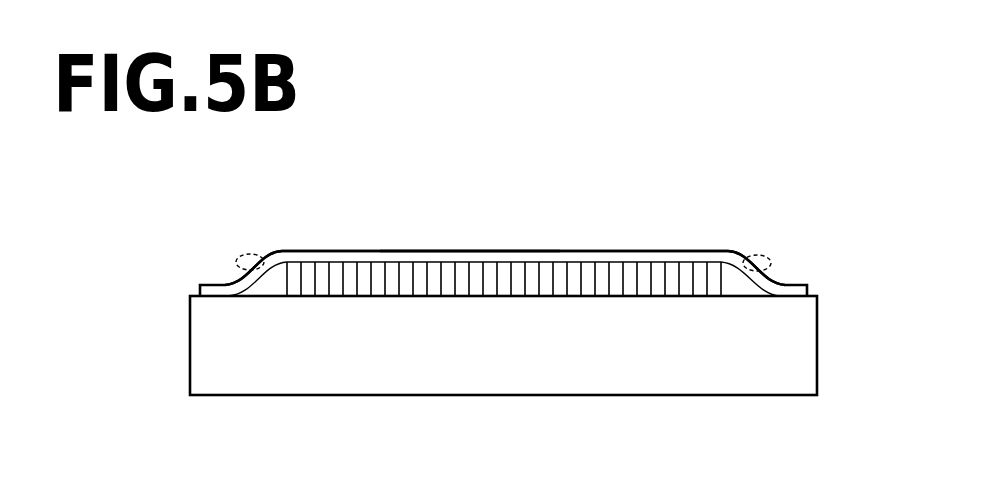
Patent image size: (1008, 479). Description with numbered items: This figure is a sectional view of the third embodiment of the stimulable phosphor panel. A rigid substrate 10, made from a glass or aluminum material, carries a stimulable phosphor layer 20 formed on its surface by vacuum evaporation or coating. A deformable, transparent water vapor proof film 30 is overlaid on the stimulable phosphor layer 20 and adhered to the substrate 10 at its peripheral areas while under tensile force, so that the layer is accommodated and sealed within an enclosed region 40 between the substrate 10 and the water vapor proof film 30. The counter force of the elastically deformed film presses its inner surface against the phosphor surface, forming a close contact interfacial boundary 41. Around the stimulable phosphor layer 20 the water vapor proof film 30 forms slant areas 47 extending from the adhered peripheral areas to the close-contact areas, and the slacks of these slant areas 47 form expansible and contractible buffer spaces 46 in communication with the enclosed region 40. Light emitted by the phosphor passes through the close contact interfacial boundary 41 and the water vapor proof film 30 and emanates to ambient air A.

The ambient air A is at (818, 137).
The substrate 10 is at (803, 340).
The stimulable phosphor layer 20 is at (641, 281).
The water vapor proof film 30 is at (560, 261).
The enclosed region 40 is at (747, 297).
The close contact interfacial boundary 41 is at (473, 250).
The buffer spaces 46 is at (236, 266).
The slant areas 47 is at (266, 266).